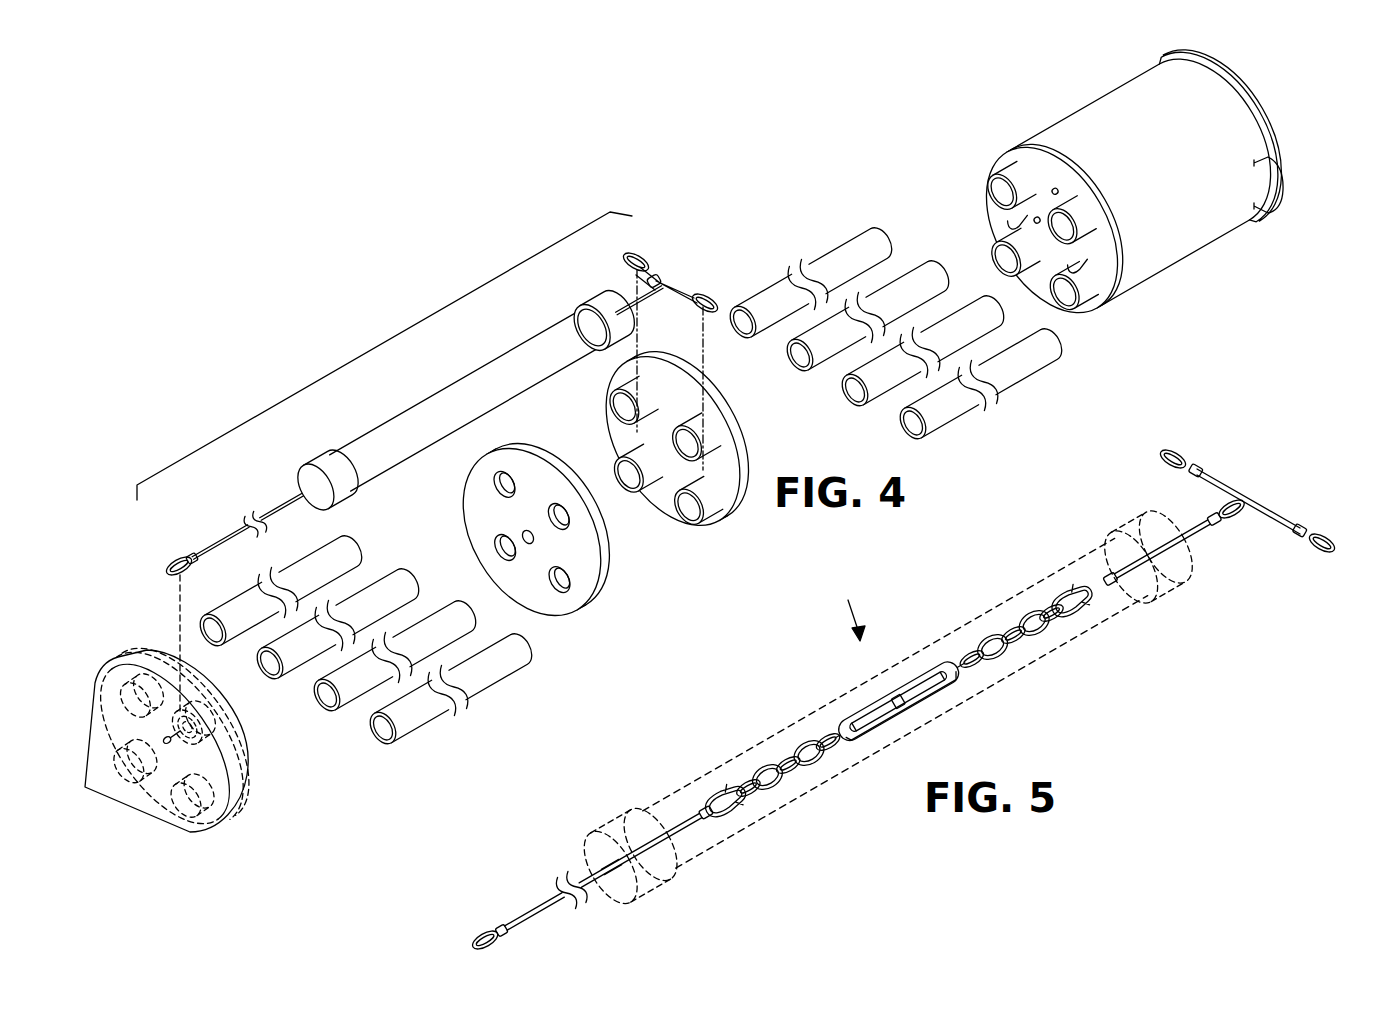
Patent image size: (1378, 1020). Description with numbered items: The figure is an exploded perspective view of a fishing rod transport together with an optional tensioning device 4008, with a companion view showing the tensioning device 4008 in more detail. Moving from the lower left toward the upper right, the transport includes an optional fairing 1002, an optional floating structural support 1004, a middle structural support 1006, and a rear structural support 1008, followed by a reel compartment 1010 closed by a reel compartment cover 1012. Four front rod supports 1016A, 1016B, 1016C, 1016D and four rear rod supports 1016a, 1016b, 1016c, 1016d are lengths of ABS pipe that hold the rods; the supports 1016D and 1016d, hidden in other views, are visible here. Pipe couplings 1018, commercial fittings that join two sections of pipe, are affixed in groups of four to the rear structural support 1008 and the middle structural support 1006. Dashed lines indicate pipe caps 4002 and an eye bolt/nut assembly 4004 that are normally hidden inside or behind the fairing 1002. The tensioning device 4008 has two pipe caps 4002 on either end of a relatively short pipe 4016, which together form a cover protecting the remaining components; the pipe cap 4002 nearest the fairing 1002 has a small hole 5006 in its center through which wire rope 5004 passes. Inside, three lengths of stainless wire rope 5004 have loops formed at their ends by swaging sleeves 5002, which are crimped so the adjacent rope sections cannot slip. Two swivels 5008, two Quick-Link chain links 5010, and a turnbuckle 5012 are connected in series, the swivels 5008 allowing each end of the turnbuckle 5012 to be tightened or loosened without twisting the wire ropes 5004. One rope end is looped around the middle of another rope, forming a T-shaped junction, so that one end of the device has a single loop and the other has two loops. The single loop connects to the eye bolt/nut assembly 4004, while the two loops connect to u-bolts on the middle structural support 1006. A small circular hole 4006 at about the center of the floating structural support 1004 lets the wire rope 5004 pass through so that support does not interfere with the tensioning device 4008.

In FIG. 4, the fairing 1002 is at (244, 818).
In FIG. 4, the floating structural support 1004 is at (592, 604).
In FIG. 4, the middle structural support 1006 is at (742, 520).
In FIG. 4, the rear structural support 1008 is at (1000, 148).
In FIG. 4, the reel compartment 1010 is at (1100, 98).
In FIG. 4, the reel compartment cover 1012 is at (1270, 97).
In FIG. 4, the rear rod support 1016a is at (1043, 376).
In FIG. 4, the rear rod support 1016b is at (848, 400).
In FIG. 4, the rear rod support 1016c is at (935, 265).
In FIG. 4, the rear rod support 1016d is at (870, 235).
In FIG. 4, the front rod support 1016A is at (502, 680).
In FIG. 4, the front rod support 1016B is at (342, 708).
In FIG. 4, the front rod support 1016C is at (390, 575).
In FIG. 4, the front rod support 1016D is at (198, 620).
In FIG. 4, the pipe coupling 1018 is at (1092, 302).
In FIG. 4, the pipe cap 4002 is at (588, 304).
In FIG. 5, the pipe cap 4002 is at (599, 827).
In FIG. 4, the eye bolt/nut assembly 4004 is at (200, 745).
In FIG. 4, the circular hole 4006 is at (533, 547).
In FIG. 4, the tensioning device 4008 is at (376, 345).
In FIG. 5, the tensioning device 4008 is at (838, 606).
In FIG. 4, the pipe 4016 is at (465, 380).
In FIG. 5, the pipe 4016 is at (828, 702).
In FIG. 5, the swaging sleeve 5002 is at (1195, 468).
In FIG. 5, the wire rope 5004 is at (548, 922).
In FIG. 5, the small hole 5006 is at (635, 892).
In FIG. 5, the swivel 5008 is at (738, 790).
In FIG. 5, the Quick-Link chain link 5010 is at (824, 770).
In FIG. 5, the turnbuckle 5012 is at (924, 716).